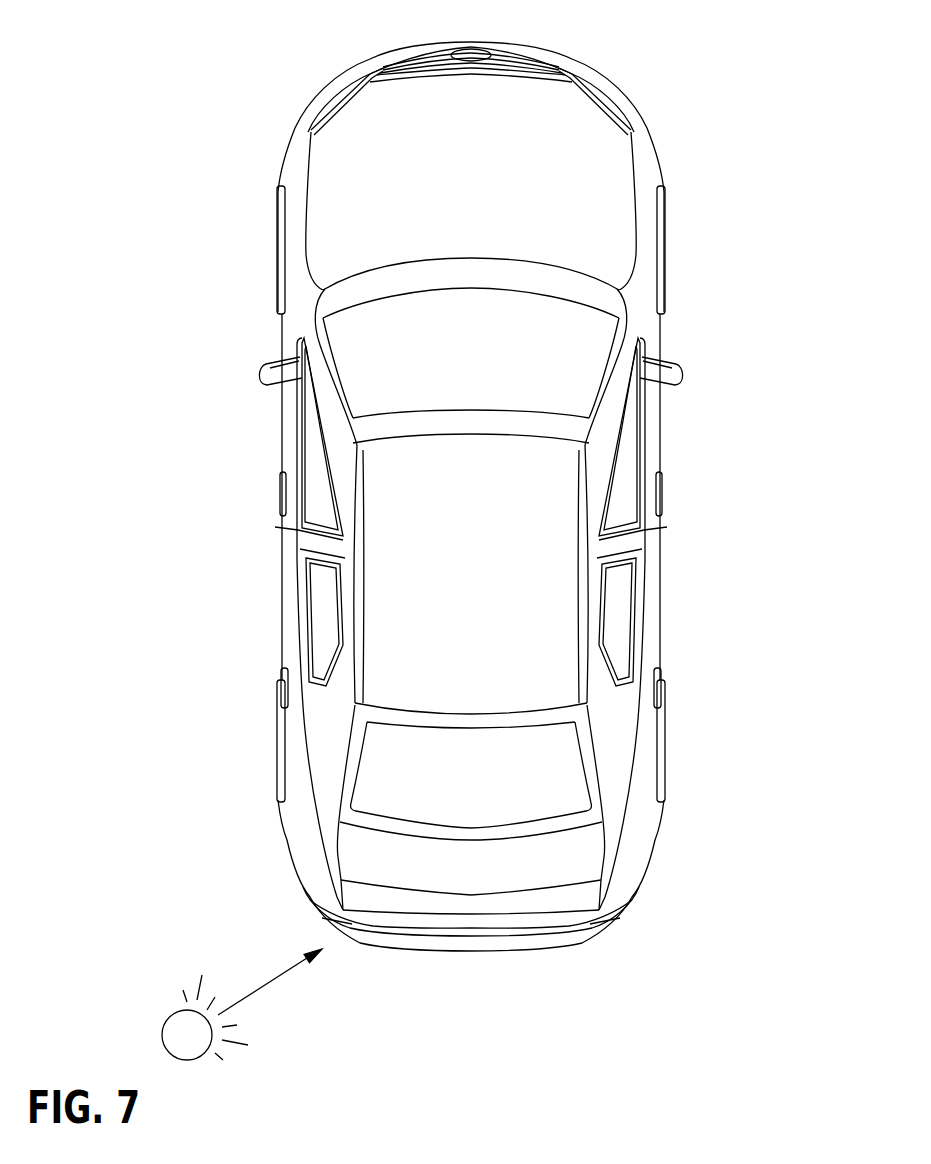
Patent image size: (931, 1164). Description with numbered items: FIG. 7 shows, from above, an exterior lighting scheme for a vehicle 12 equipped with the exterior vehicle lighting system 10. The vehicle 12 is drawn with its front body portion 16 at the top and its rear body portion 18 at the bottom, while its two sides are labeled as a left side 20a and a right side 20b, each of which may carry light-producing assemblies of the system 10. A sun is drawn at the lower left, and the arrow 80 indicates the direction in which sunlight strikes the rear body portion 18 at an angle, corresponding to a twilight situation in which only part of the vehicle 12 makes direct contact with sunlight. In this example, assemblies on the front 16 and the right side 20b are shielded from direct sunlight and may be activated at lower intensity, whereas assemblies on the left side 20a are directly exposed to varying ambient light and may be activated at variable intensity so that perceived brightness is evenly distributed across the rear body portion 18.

The exterior vehicle lighting system 10 is at (730, 86).
The vehicle 12 is at (238, 297).
The front body portion 16 is at (556, 54).
The rear body portion 18 is at (517, 940).
The left side 20a is at (287, 310).
The right side 20b is at (652, 302).
The arrow 80 is at (264, 981).